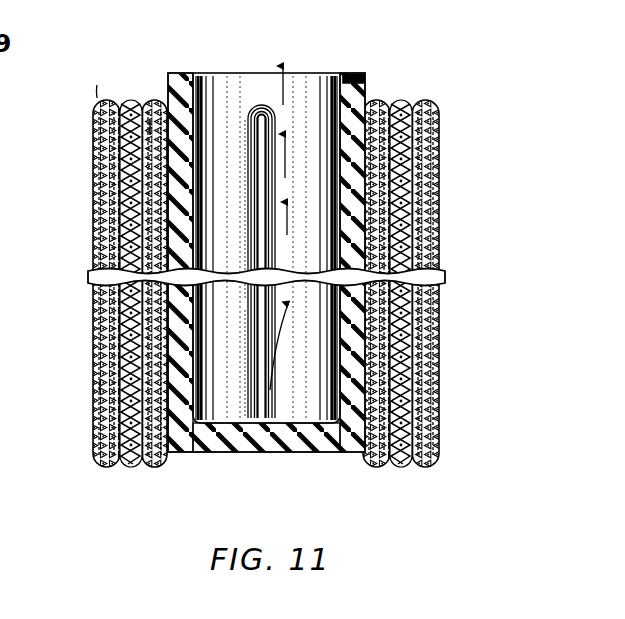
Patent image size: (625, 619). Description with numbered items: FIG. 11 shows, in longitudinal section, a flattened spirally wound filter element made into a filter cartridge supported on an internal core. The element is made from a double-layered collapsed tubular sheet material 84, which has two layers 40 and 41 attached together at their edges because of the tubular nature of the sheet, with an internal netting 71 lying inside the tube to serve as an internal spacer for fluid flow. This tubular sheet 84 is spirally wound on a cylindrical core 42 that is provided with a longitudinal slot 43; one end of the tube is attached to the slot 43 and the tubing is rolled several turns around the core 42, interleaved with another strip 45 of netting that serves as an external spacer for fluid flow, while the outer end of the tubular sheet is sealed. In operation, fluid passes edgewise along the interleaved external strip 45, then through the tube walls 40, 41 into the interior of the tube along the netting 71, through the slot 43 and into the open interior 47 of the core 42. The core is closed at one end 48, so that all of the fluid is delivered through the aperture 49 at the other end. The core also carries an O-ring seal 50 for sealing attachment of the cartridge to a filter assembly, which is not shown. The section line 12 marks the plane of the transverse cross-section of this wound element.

The section line 12- 12 is at (82, 312).
The tube layer 40 is at (95, 163).
The tube layer 41 is at (100, 199).
The cylindrical core 42 is at (352, 80).
The longitudinal slot 43 is at (268, 386).
The external netting strip 45 is at (390, 150).
The open interior of core 47 is at (302, 126).
The closed end of core 48 is at (284, 453).
The aperture 49 is at (229, 82).
The O-ring seal 50 is at (366, 95).
The internal netting 71 is at (150, 127).
The tubular sheet material 84 is at (99, 92).